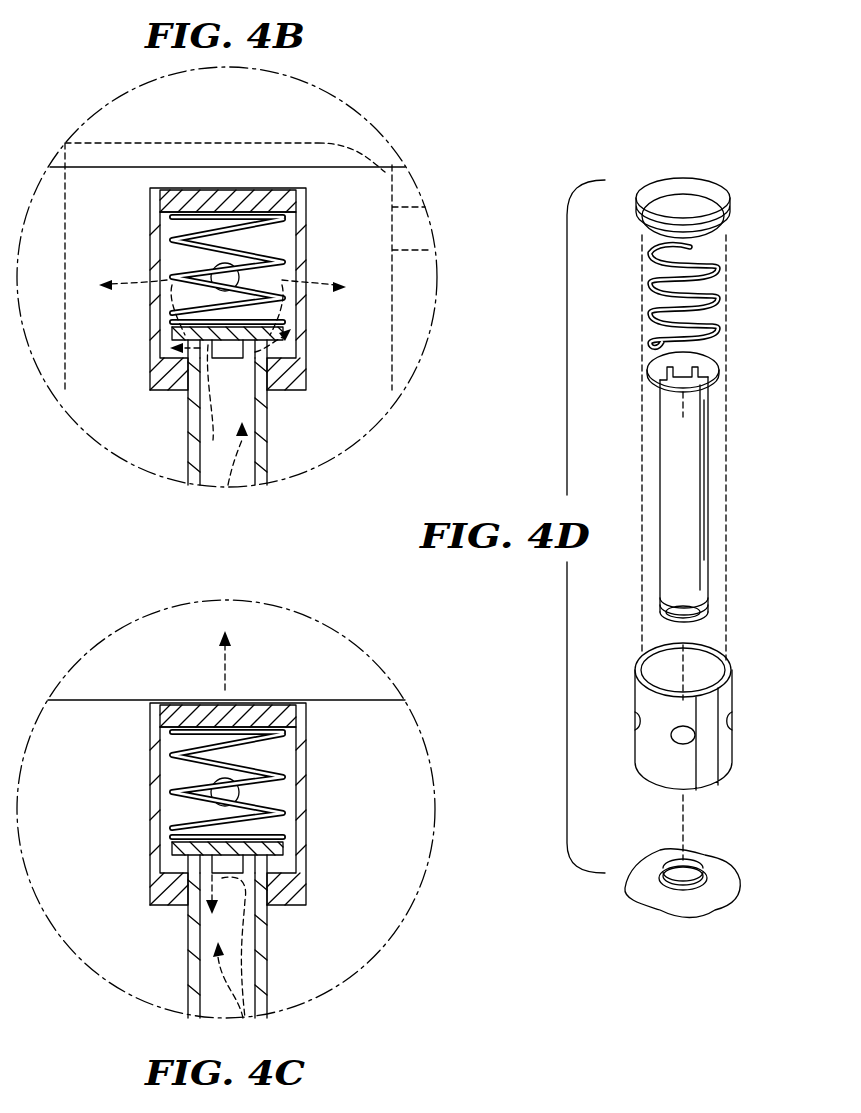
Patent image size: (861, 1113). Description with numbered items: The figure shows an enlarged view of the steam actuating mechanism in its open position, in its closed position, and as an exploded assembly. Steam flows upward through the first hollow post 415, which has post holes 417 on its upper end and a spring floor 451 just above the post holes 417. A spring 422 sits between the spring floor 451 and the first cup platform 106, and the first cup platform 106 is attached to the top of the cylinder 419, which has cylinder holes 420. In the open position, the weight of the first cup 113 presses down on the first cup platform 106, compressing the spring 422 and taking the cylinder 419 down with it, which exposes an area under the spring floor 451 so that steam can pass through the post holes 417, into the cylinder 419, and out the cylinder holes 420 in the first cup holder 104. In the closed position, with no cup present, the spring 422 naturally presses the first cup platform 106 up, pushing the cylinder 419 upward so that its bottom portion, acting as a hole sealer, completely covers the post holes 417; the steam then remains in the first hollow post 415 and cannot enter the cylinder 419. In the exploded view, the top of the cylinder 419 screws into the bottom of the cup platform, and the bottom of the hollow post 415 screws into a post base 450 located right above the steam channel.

In FIG. 4B, the first cup holder 104 is at (348, 223).
In FIG. 4C, the first cup holder 104 is at (377, 747).
In FIG. 4B, the first cup 113 is at (320, 143).
In FIG. 4B, the first cup platform 106 is at (118, 206).
In FIG. 4C, the first cup platform 106 is at (118, 671).
In FIG. 4D, the first cup platform 106 is at (680, 178).
In FIG. 4B, the spring 422 is at (203, 233).
In FIG. 4C, the spring 422 is at (205, 748).
In FIG. 4D, the spring 422 is at (645, 285).
In FIG. 4B, the cylinder 419 is at (302, 230).
In FIG. 4C, the cylinder 419 is at (302, 751).
In FIG. 4D, the cylinder 419 is at (645, 757).
In FIG. 4B, the cylinder holes 420 is at (152, 270).
In FIG. 4C, the cylinder holes 420 is at (152, 790).
In FIG. 4D, the cylinder holes 420 is at (672, 738).
In FIG. 4B, the spring floor 451 is at (180, 333).
In FIG. 4C, the spring floor 451 is at (227, 848).
In FIG. 4D, the spring floor 451 is at (722, 371).
In FIG. 4B, the post holes 417 is at (193, 362).
In FIG. 4C, the post holes 417 is at (190, 882).
In FIG. 4D, the post holes 417 is at (680, 367).
In FIG. 4B, the first hollow post 415 is at (268, 422).
In FIG. 4C, the first hollow post 415 is at (267, 960).
In FIG. 4D, the first hollow post 415 is at (665, 543).
In FIG. 4D, the post base 450 is at (627, 888).